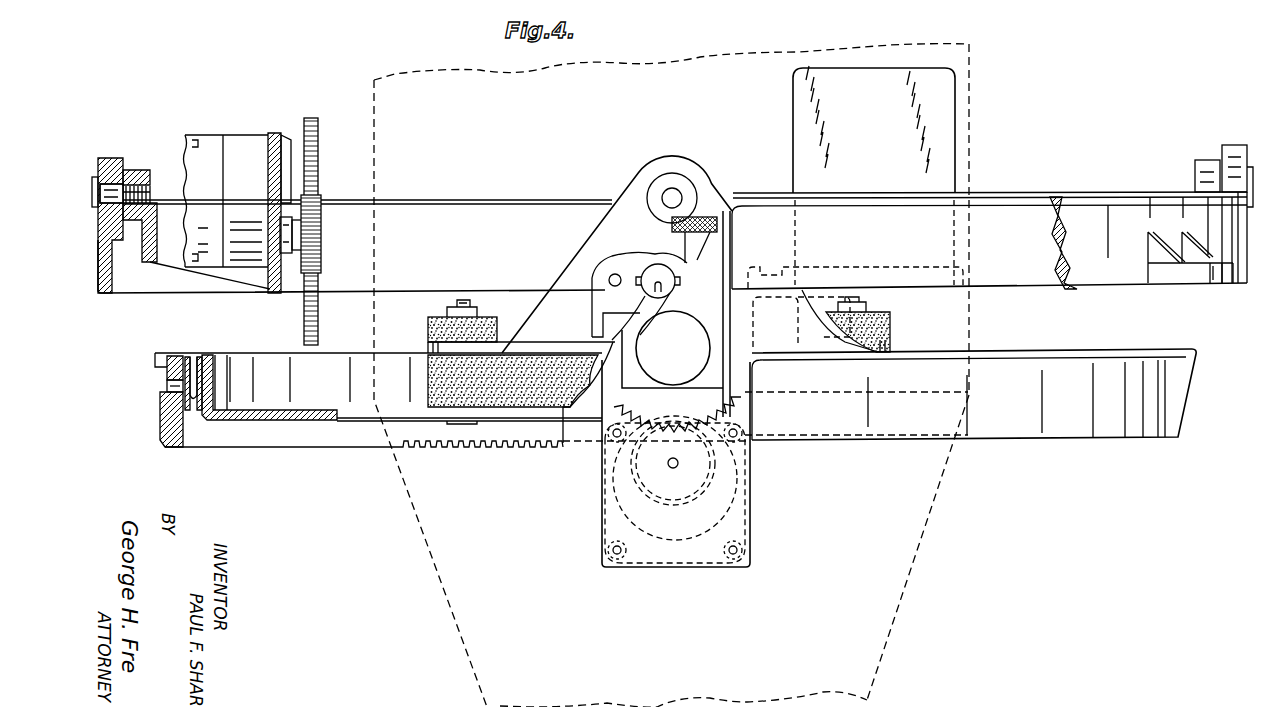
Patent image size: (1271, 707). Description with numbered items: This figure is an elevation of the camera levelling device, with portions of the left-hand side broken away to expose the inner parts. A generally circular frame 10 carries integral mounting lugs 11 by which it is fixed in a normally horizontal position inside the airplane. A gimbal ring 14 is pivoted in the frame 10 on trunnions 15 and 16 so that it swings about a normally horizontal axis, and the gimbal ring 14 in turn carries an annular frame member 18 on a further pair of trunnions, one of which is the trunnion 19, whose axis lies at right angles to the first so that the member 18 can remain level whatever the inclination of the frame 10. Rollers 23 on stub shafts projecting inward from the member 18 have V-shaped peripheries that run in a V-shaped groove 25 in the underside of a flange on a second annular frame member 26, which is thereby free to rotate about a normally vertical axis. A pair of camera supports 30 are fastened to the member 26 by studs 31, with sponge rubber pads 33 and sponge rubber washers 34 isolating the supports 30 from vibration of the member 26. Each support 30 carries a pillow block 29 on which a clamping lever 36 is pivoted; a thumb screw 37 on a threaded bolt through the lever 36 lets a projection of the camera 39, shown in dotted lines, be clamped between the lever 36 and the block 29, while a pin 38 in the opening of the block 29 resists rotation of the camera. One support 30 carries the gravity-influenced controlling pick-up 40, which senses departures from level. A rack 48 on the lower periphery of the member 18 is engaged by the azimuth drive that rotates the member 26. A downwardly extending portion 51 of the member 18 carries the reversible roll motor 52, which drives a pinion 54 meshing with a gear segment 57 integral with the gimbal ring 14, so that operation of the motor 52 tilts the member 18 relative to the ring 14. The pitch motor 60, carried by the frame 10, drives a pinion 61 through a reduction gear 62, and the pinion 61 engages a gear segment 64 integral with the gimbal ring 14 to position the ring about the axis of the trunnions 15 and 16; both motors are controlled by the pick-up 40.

The frame 10 is at (276, 150).
The mounting lugs 11 is at (1192, 274).
The gimbal ring 14 is at (166, 215).
The trunnion 15 is at (1251, 165).
The trunnion 16 is at (110, 182).
The annular frame member 18 is at (167, 428).
The trunnion 19 is at (674, 197).
The rollers 23 is at (168, 400).
The V-shaped groove 25 is at (191, 356).
The annular frame member 26 is at (245, 408).
The pillow block 29 is at (559, 277).
The camera supports 30 is at (562, 333).
The studs 31 is at (455, 300).
The sponge rubber pads 33 is at (430, 367).
The sponge rubber washers 34 is at (428, 325).
The clamping lever 36 is at (640, 255).
The thumb screw 37 is at (668, 225).
The pin 38 is at (670, 288).
The camera 39 is at (372, 92).
The controlling pick-up 40 is at (936, 158).
The rack 48 is at (482, 447).
The downwardly extending portion 51 is at (750, 455).
The roll motor 52 is at (745, 522).
The pinion 54 is at (690, 480).
The gear segment 57 is at (722, 410).
The pitch motor 60 is at (210, 145).
The pinion 61 is at (322, 222).
The reduction gear 62 is at (248, 148).
The gear segment 64 is at (320, 158).